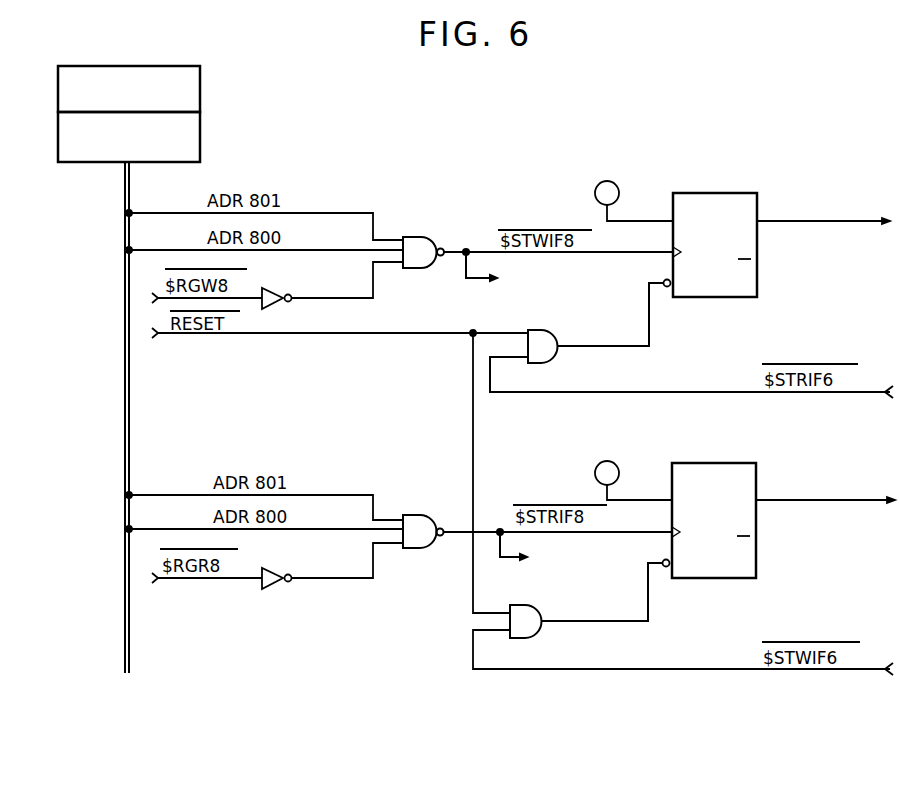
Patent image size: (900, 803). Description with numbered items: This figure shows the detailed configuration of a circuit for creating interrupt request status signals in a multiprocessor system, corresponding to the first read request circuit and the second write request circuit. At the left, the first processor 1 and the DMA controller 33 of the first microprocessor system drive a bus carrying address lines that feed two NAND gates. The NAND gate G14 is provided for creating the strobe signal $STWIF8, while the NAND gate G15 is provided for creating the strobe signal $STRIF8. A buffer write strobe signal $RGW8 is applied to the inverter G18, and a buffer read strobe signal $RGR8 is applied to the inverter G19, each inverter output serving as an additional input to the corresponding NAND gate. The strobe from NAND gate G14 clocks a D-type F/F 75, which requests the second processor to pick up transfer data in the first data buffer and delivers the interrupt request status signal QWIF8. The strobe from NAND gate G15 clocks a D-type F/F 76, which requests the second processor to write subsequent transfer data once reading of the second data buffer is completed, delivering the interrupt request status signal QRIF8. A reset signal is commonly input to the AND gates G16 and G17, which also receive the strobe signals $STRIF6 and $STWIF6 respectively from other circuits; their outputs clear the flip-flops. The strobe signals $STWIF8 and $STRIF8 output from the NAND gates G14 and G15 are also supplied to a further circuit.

The first processor 1 is at (200, 93).
The DMA controller 33 is at (200, 143).
The D-type F/F 75 is at (742, 193).
The D-type F/F 76 is at (742, 463).
The NAND gate G14 is at (424, 236).
The NAND gate G15 is at (427, 513).
The AND gate G16 is at (544, 331).
The AND gate G17 is at (530, 604).
The inverter G18 is at (276, 291).
The inverter G19 is at (277, 586).